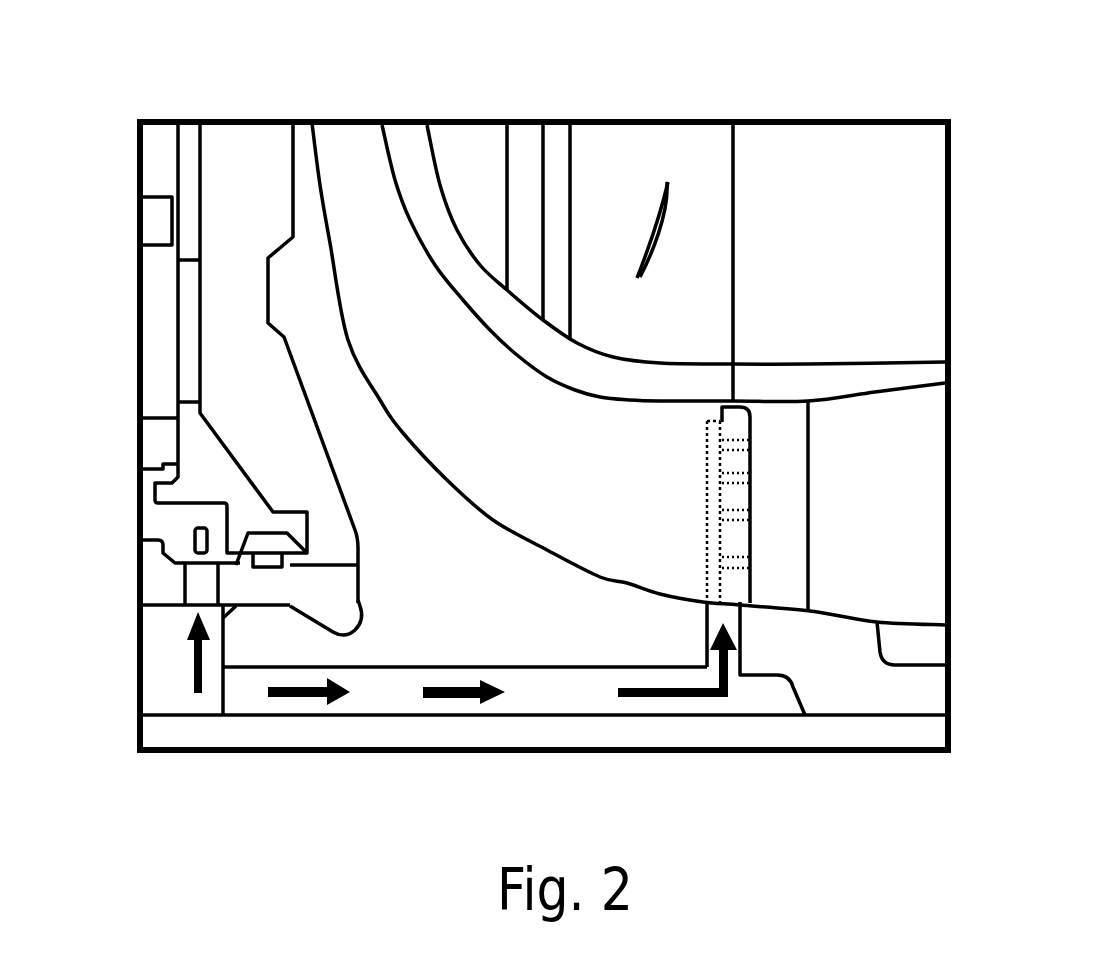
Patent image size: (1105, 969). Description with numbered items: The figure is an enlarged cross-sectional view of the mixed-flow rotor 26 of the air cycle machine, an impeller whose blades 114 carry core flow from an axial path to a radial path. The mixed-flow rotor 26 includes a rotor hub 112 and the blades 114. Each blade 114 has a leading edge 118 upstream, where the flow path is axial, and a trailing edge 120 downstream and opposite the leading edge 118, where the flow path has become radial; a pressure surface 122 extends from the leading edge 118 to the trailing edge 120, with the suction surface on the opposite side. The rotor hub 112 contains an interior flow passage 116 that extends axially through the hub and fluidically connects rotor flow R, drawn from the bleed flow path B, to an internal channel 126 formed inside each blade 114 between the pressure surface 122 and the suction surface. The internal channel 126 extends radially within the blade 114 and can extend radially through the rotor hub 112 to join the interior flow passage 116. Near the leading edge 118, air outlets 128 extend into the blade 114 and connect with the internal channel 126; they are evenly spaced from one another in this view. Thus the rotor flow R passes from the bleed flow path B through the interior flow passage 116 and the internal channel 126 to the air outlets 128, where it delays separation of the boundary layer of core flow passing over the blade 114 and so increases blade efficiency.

The trailing edge 120 is at (343, 120).
The pressure surface 122 is at (610, 487).
The blades 114 is at (627, 428).
The internal channel 126 is at (718, 430).
The mixed-flow rotor 26 is at (467, 610).
The leading edge 118 is at (752, 492).
The air outlets 128 is at (752, 567).
The rotor hub 112 is at (752, 635).
The interior flow passage 116 is at (720, 615).
The bleed flow path B is at (192, 645).
The rotor flow R is at (440, 695).